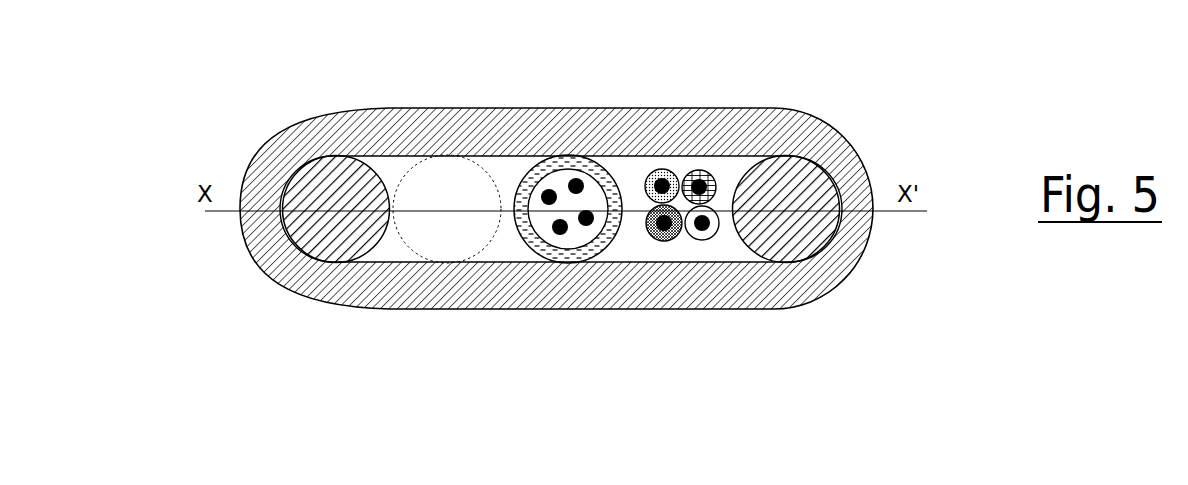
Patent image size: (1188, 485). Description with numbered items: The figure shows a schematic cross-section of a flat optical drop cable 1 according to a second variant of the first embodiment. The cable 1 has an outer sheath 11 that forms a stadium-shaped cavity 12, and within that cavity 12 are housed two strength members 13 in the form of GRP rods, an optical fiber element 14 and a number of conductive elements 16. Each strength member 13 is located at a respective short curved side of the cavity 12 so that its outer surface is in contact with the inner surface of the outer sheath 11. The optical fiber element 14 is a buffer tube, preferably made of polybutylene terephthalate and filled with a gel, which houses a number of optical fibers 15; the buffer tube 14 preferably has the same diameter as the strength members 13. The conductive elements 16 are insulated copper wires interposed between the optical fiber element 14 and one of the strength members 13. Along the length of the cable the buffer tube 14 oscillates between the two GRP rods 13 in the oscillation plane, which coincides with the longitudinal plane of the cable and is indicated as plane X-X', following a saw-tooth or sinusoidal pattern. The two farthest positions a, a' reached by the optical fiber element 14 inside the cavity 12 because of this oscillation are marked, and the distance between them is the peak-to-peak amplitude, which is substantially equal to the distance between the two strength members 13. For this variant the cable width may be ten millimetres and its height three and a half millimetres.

The flat optical drop cable 1 is at (267, 126).
The outer sheath 11 is at (790, 137).
The cavity 12 is at (388, 172).
The strength member 13 is at (332, 260).
The optical fiber element 14 is at (560, 140).
The optical fiber 15 is at (587, 222).
The conductive element 16 is at (700, 238).
The farthest position a is at (540, 342).
The farthest position a' is at (429, 350).